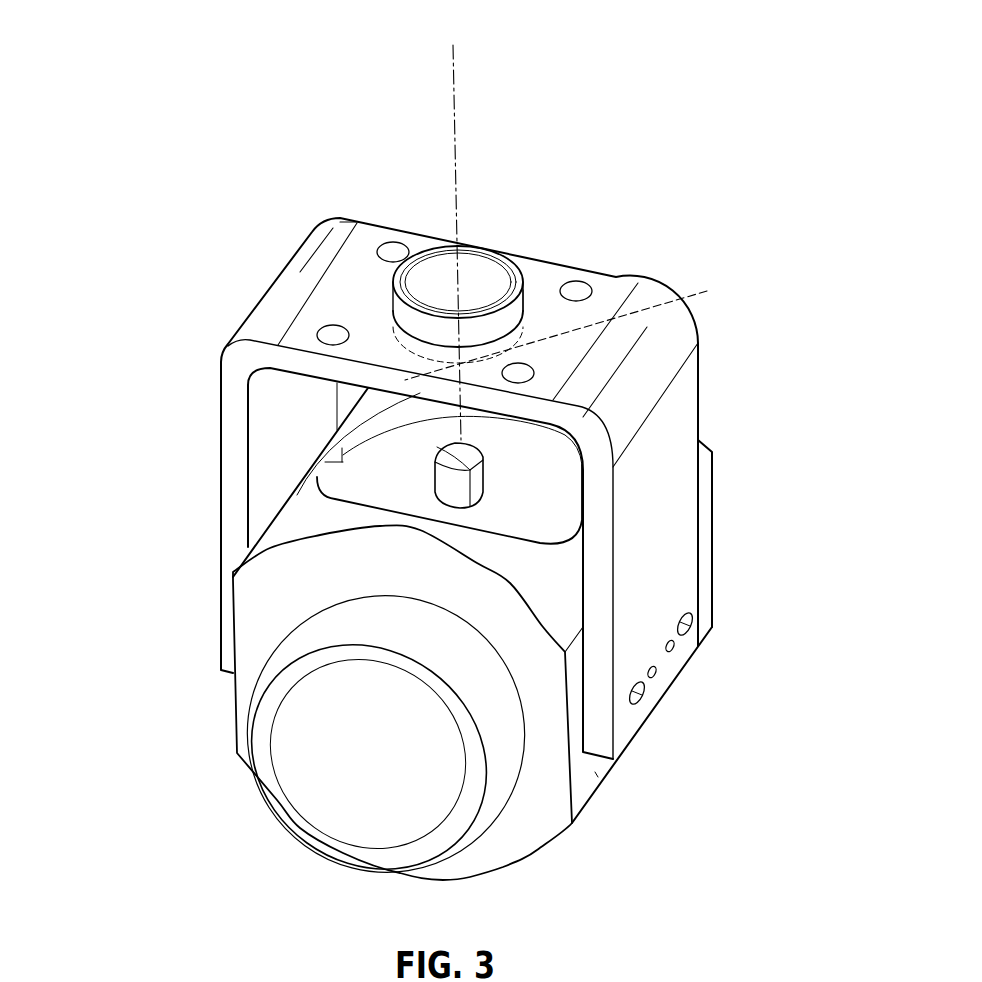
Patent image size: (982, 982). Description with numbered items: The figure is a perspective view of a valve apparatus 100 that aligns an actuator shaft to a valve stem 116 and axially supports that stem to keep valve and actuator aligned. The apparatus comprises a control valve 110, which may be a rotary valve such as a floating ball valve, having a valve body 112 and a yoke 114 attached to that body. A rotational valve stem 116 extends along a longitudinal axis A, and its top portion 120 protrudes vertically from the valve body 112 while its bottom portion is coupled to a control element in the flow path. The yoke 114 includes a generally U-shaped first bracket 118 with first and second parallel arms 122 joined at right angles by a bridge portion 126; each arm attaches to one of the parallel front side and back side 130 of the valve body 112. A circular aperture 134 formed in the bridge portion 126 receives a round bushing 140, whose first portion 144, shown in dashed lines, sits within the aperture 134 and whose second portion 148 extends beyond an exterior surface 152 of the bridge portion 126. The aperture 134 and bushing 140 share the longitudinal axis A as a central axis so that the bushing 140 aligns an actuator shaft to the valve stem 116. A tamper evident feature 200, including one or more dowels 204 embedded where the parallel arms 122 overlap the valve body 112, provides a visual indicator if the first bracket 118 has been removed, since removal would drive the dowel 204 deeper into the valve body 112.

The valve apparatus 100 is at (142, 238).
The longitudinal axis A is at (454, 72).
The control valve 110 is at (216, 725).
The valve body 112 is at (250, 628).
The yoke 114 is at (237, 360).
The valve stem 116 is at (447, 490).
The first bracket 118 is at (300, 270).
The top portion 120 is at (343, 453).
The parallel arms 122 is at (235, 532).
The bridge portion 126 is at (613, 288).
The parallel back side 130 is at (595, 772).
The aperture 134 is at (525, 303).
The bushing 140 is at (357, 222).
The first portion 144 is at (580, 328).
The second portion 148 is at (524, 284).
The exterior surface 152 is at (363, 306).
The tamper evident feature 200 is at (650, 632).
The dowel 204 is at (674, 652).